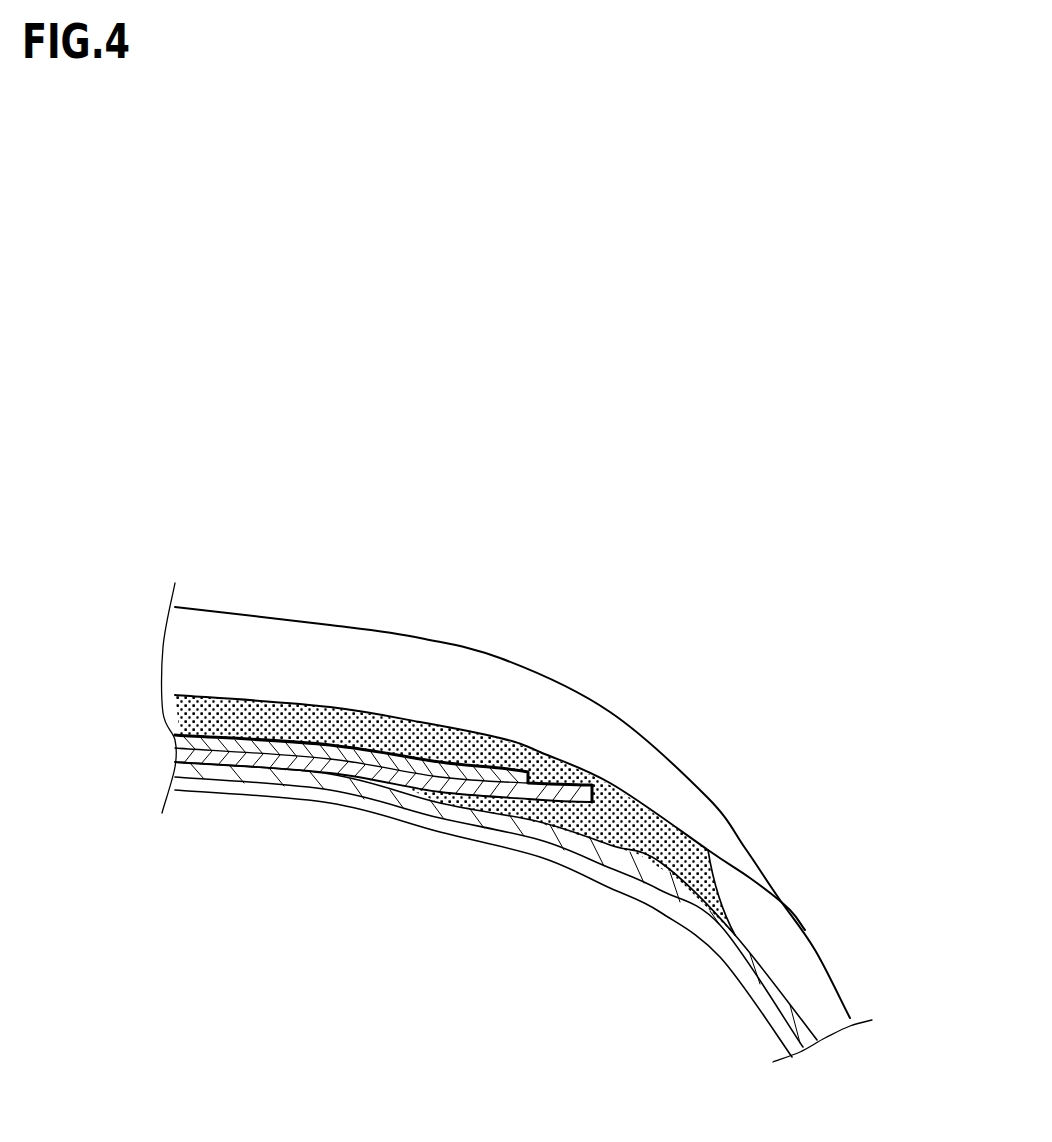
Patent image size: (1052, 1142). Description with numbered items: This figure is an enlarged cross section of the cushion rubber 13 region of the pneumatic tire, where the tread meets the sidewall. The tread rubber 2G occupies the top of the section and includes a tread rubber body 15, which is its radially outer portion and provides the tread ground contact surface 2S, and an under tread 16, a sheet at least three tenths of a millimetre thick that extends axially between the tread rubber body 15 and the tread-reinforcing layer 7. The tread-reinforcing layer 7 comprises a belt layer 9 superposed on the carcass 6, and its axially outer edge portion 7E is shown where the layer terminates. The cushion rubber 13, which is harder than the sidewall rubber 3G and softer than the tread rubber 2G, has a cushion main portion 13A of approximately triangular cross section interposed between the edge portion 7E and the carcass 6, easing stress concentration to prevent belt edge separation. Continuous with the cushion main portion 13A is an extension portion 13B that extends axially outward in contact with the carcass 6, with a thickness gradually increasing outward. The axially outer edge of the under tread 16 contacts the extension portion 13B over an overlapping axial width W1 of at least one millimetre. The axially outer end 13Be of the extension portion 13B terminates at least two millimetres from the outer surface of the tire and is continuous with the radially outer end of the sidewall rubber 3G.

The tread rubber 2G is at (217, 608).
The tread ground contact surface 2S is at (420, 632).
The tread rubber body 15 is at (340, 645).
The under tread 16 is at (283, 725).
The tread-reinforcing layer 7 is at (308, 758).
The belt layer 9 is at (383, 838).
The edge portion of the tread-reinforcing layer 7E is at (545, 773).
The carcass 6 is at (413, 793).
The cushion rubber 13 is at (520, 893).
The cushion main portion 13A is at (567, 808).
The extension portion 13B is at (746, 867).
The axially outer end of the extension portion 13Be is at (722, 890).
The sidewall rubber 3G is at (797, 960).
The overlapping axial width W1 is at (708, 850).